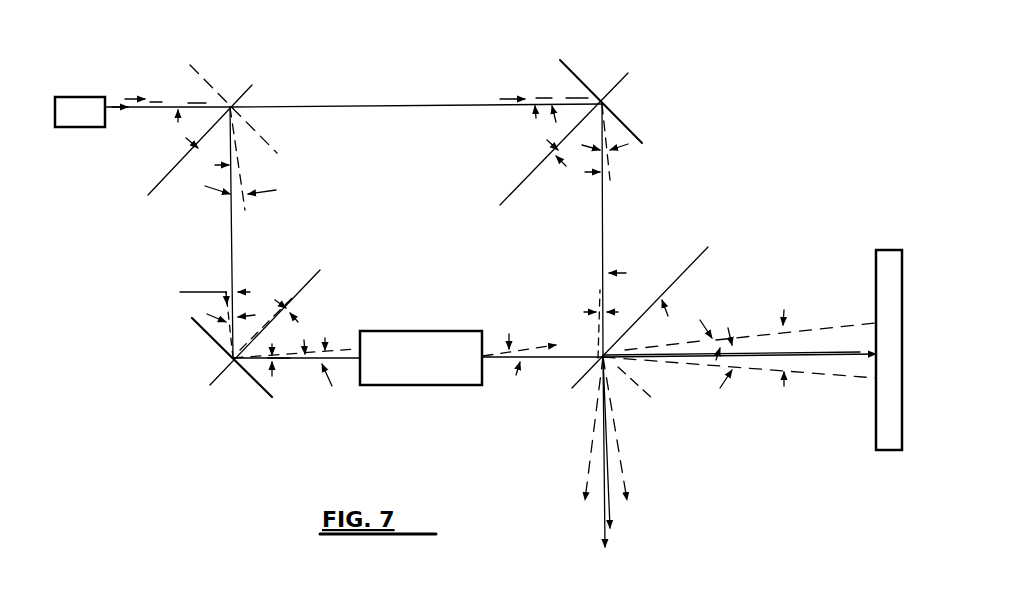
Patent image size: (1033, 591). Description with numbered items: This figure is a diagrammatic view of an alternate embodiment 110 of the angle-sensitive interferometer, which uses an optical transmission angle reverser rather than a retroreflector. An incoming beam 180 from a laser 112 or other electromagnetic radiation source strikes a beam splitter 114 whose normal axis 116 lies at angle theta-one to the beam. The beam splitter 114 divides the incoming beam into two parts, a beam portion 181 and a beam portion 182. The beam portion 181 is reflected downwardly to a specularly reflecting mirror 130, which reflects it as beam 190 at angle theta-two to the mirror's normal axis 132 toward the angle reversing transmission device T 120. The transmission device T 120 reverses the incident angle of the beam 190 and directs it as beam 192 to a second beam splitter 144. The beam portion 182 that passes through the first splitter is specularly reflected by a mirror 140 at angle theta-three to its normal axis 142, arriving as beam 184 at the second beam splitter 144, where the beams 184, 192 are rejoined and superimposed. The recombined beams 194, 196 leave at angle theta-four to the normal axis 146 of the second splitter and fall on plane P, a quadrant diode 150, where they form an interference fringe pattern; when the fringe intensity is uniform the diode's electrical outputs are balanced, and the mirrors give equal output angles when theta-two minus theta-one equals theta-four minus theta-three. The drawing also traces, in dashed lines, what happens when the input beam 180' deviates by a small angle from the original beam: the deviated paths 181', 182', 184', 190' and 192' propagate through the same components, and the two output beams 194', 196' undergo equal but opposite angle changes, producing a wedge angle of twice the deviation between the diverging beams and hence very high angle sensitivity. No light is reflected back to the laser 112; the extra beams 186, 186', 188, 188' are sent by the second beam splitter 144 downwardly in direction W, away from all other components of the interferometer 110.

The alternate embodiment interferometer 110 is at (670, 110).
The laser 112 is at (86, 97).
The beam splitter 114 is at (218, 95).
The normal axis 116 is at (158, 183).
The angle reversing transmission device T 120 is at (420, 386).
The specularly reflecting mirror 130 is at (213, 352).
The normal axis 132 is at (294, 324).
The specularly reflecting mirror 140 is at (585, 85).
The normal axis 142 is at (530, 180).
The second beam splitter 144 is at (586, 334).
The normal axis 146 is at (694, 252).
The quadrant diode 150 is at (876, 436).
The incoming beam 180 is at (153, 136).
The input beam 180' is at (199, 57).
The beam portion 181 is at (198, 232).
The tilted reflected beam 181' is at (242, 232).
The beam portion 182 is at (416, 78).
The tilted transmitted beam 182' is at (526, 86).
The beam 184 is at (567, 230).
The tilted reference beam 184' is at (613, 231).
The extra beam 186 is at (646, 442).
The extra beam 186' is at (649, 428).
The extra beam 188 is at (576, 471).
The extra beam 188' is at (567, 428).
The beam 190 is at (296, 397).
The tilted test beam 190' is at (294, 365).
The beam 192 is at (542, 380).
The tilted test beam after object 192' is at (488, 325).
The recombined beam 194 is at (739, 387).
The output beam 194' is at (739, 397).
The recombined beam 196 is at (750, 294).
The output beam 196' is at (816, 268).